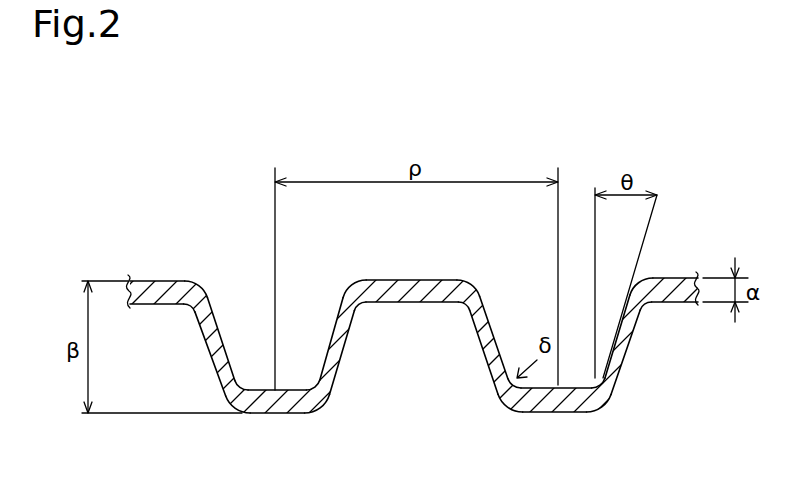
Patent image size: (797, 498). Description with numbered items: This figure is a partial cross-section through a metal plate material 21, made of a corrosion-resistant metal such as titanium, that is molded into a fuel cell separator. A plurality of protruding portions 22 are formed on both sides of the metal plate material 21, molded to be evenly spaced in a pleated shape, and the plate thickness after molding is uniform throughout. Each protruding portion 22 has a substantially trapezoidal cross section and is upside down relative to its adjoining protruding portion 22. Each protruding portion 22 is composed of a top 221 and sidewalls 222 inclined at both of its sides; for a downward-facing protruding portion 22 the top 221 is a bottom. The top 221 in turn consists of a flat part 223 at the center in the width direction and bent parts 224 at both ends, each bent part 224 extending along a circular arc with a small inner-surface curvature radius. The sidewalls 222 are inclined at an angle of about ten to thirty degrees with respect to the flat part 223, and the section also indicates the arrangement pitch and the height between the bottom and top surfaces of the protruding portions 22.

The metal plate material 21 is at (148, 281).
The protruding portion 22 is at (269, 414).
The top 221 is at (298, 415).
The sidewall 222 is at (209, 353).
The flat part 223 is at (561, 413).
The bent part 224 is at (202, 290).